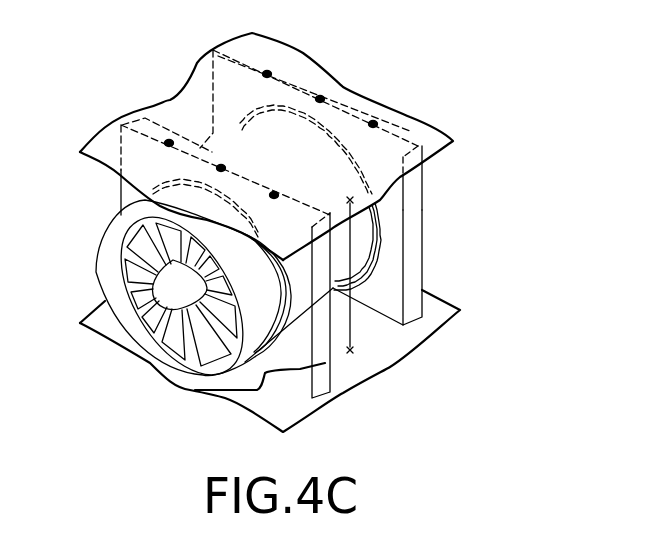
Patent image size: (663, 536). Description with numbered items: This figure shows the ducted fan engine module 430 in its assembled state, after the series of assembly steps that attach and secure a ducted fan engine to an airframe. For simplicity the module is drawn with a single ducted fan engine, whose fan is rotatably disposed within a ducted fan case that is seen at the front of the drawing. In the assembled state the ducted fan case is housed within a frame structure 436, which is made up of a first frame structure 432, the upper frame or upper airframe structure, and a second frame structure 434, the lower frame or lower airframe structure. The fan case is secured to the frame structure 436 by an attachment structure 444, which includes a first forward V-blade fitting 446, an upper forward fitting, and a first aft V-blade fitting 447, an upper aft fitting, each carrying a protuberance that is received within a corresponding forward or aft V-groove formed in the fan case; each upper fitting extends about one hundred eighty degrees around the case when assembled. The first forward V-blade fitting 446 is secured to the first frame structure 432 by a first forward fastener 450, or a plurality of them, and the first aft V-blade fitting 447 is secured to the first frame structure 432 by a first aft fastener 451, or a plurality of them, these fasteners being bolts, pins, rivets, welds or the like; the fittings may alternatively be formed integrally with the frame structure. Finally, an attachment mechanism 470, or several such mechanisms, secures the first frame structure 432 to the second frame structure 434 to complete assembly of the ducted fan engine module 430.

The ducted fan engine module 430 is at (505, 112).
The first frame structure 432 is at (410, 117).
The second frame structure 434 is at (387, 362).
The frame structure 436 is at (290, 64).
The attachment structure 444 is at (413, 269).
The first forward V-blade fitting 446 is at (130, 193).
The first aft V-blade fitting 447 is at (413, 199).
The first forward fastener 450 is at (221, 168).
The first aft fastener 451 is at (320, 98).
The attachment mechanism 470 is at (350, 332).